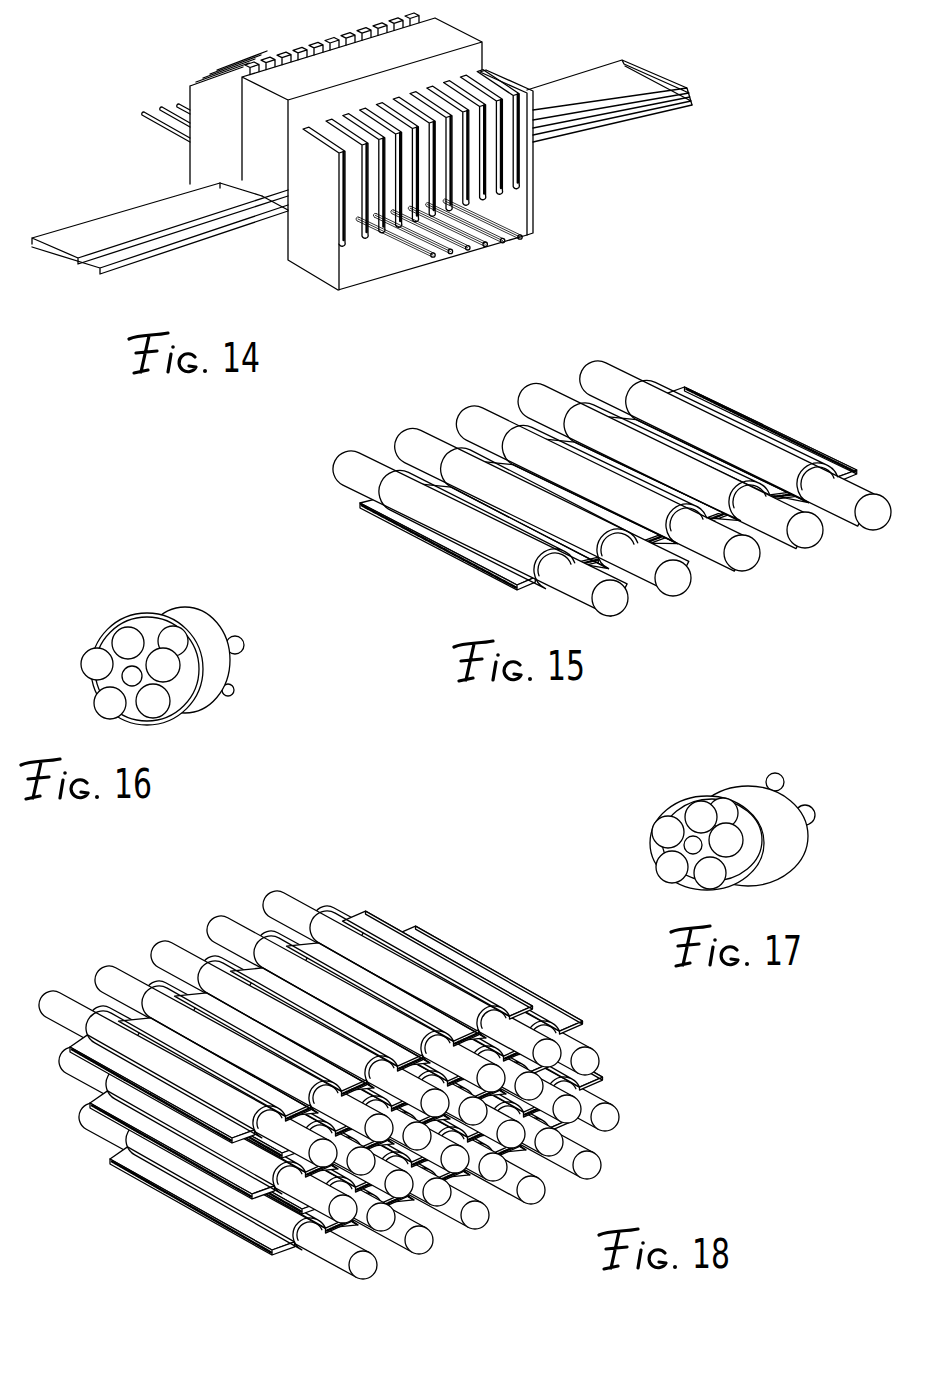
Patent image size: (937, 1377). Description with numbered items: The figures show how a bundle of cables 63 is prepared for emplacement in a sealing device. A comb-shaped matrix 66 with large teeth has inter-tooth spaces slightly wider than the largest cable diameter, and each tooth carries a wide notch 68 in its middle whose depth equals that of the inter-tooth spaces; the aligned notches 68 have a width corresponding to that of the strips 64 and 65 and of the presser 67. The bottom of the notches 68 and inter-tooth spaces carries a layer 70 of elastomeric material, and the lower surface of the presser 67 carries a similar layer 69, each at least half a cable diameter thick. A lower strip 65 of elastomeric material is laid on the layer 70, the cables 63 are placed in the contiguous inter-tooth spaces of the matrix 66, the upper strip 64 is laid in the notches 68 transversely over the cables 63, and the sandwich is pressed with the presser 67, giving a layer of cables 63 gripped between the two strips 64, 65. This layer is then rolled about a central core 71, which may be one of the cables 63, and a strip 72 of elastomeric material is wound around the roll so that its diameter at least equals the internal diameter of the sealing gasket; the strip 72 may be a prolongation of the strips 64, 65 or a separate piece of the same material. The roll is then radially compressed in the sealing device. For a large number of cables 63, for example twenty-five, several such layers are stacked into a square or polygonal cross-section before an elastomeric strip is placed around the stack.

In FIG. 14, the cables 63 is at (433, 255).
In FIG. 15, the cables 63 is at (872, 512).
In FIG. 16, the cables 63 is at (152, 700).
In FIG. 17, the cables 63 is at (707, 863).
In FIG. 18, the cables 63 is at (590, 1165).
In FIG. 14, the strip of elastomeric material 64 is at (617, 73).
In FIG. 15, the strip of elastomeric material 64 is at (612, 500).
In FIG. 17, the strip of elastomeric material 64 is at (738, 806).
In FIG. 14, the strip of elastomeric material 65 is at (680, 92).
In FIG. 15, the strip of elastomeric material 65 is at (612, 500).
In FIG. 17, the strip of elastomeric material 65 is at (738, 806).
In FIG. 14, the matrix 66 is at (549, 212).
In FIG. 14, the presser 67 is at (297, 67).
In FIG. 14, the notch 68 is at (290, 170).
In FIG. 14, the layer of elastomeric material 69 is at (262, 184).
In FIG. 14, the layer of elastomeric material 70 is at (283, 217).
In FIG. 16, the central core 71 is at (160, 720).
In FIG. 16, the strip of elastomeric material 72 is at (200, 630).
In FIG. 17, the strip of elastomeric material 72 is at (745, 808).